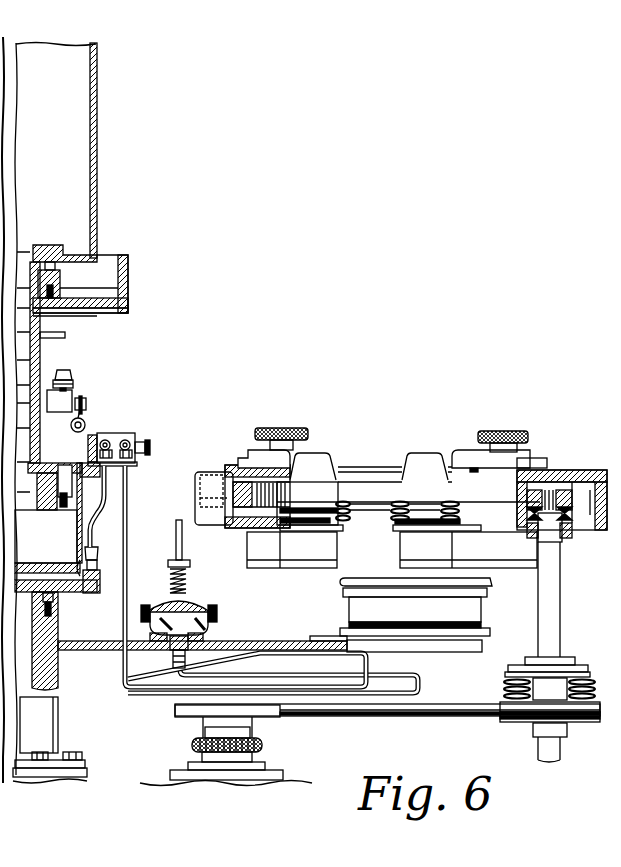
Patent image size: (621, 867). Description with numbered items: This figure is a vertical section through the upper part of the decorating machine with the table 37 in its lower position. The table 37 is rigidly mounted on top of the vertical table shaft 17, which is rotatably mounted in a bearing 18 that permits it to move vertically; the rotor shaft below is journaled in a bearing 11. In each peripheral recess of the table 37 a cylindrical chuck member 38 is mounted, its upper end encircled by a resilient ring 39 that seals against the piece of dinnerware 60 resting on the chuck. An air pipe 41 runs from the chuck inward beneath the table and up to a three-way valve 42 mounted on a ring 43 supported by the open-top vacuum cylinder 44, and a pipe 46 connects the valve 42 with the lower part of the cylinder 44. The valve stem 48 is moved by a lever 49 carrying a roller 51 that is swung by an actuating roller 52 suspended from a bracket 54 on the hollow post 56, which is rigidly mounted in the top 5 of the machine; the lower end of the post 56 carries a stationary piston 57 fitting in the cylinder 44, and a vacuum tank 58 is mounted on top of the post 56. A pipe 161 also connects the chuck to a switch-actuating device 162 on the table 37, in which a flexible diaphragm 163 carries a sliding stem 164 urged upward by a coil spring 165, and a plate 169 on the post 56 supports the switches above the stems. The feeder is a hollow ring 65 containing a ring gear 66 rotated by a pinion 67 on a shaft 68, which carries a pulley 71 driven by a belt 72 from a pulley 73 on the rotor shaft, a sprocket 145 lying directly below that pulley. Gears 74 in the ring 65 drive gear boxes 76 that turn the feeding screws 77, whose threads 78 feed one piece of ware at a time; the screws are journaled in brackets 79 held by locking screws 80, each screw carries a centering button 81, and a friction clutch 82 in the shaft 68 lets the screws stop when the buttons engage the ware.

The top 5 is at (130, 270).
The bearing 11 is at (173, 774).
The table shaft 17 is at (58, 692).
The bearing 18 is at (48, 738).
The table 37 is at (290, 641).
The chuck member 38 is at (472, 619).
The resilient ring 39 is at (486, 593).
The air pipe 41 is at (128, 503).
The three-way valve 42 is at (122, 436).
The ring 43 is at (128, 465).
The vacuum cylinder 44 is at (70, 600).
The pipe 46 is at (94, 528).
The valve stem 48 is at (88, 452).
The lever 49 is at (71, 426).
The roller 51 is at (88, 404).
The actuating roller 52 is at (72, 396).
The bracket 54 is at (45, 385).
The hollow post 56 is at (40, 318).
The stationary piston 57 is at (43, 508).
The vacuum tank 58 is at (97, 136).
The dinnerware 60 is at (340, 579).
The hollow ring 65 is at (230, 472).
The ring gear 66 is at (603, 470).
The pinion 67 is at (566, 487).
The shaft 68 is at (557, 598).
The pulley 71 is at (523, 720).
The belt 72 is at (377, 720).
The pulley 73 is at (265, 719).
The gear 74 is at (252, 525).
The gear box 76 is at (270, 558).
The feeding screw 77 is at (323, 500).
The threads 78 is at (390, 515).
The bracket 79 is at (322, 453).
The locking screw 80 is at (300, 431).
The centering button 81 is at (395, 537).
The friction clutch 82 is at (507, 675).
The sprocket 145 is at (193, 745).
The pipe 161 is at (354, 674).
The switch-actuating device 162 is at (196, 607).
The flexible diaphragm 163 is at (206, 626).
The sliding stem 164 is at (170, 600).
The coil spring 165 is at (172, 580).
The plate 169 is at (65, 336).